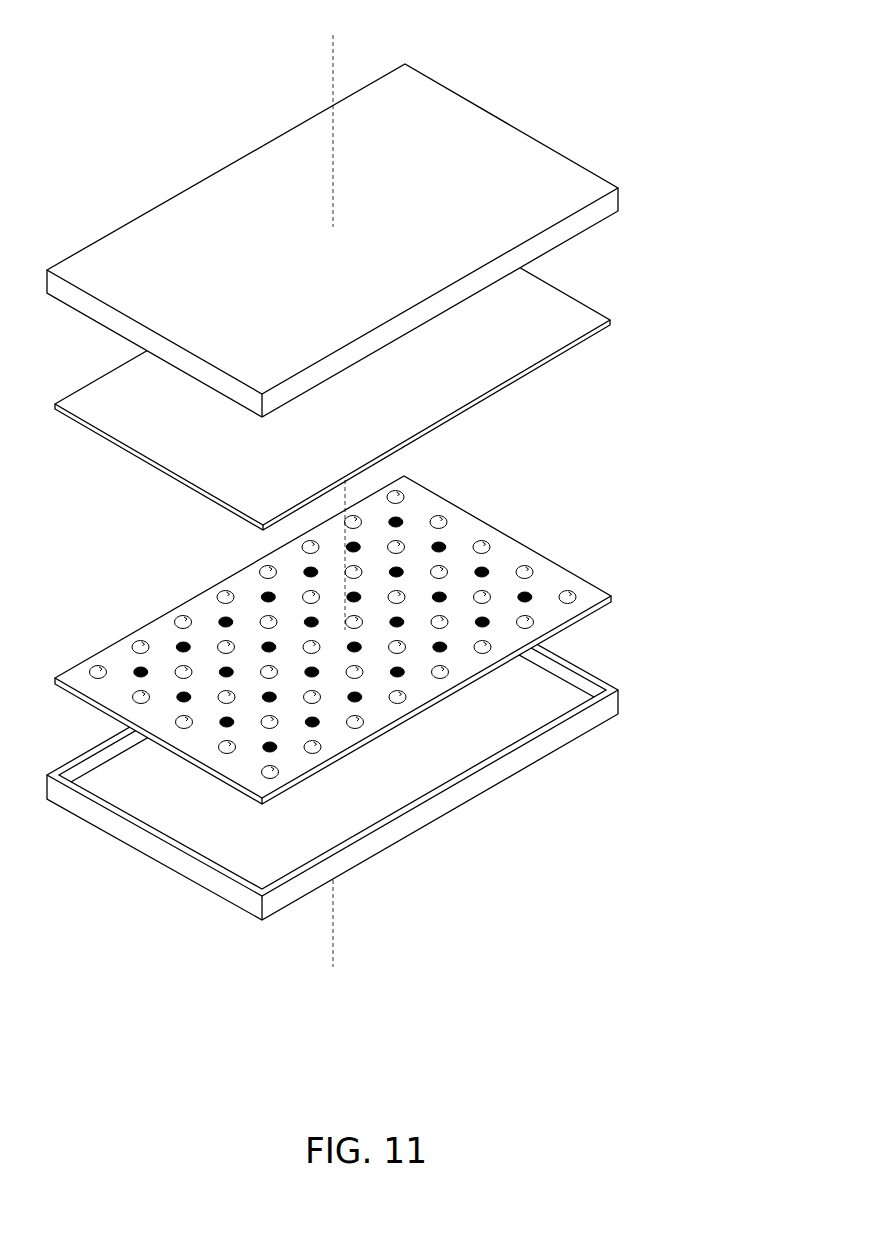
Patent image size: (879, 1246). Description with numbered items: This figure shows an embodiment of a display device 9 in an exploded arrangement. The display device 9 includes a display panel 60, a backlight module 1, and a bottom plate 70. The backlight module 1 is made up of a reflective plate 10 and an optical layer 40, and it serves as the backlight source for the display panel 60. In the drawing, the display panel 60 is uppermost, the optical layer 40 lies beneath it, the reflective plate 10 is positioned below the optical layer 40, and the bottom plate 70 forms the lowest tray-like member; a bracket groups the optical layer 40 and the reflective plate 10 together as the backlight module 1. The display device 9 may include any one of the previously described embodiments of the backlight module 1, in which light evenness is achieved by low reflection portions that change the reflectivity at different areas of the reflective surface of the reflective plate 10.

The display device 9 is at (106, 37).
The display panel 60 is at (547, 163).
The optical layer 40 is at (573, 320).
The reflective plate 10 is at (363, 640).
The backlight module 1 is at (381, 502).
The bottom plate 70 is at (585, 673).